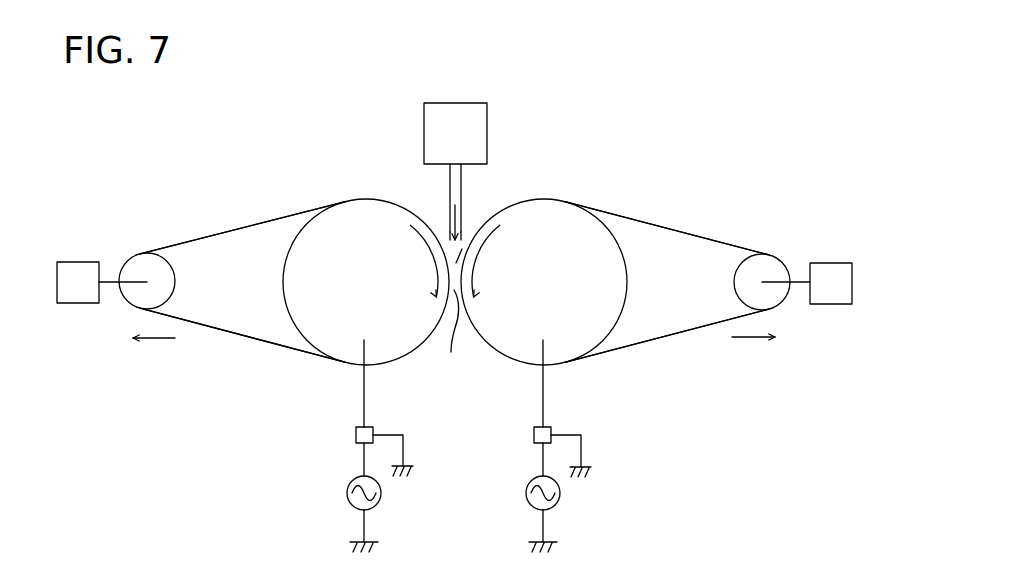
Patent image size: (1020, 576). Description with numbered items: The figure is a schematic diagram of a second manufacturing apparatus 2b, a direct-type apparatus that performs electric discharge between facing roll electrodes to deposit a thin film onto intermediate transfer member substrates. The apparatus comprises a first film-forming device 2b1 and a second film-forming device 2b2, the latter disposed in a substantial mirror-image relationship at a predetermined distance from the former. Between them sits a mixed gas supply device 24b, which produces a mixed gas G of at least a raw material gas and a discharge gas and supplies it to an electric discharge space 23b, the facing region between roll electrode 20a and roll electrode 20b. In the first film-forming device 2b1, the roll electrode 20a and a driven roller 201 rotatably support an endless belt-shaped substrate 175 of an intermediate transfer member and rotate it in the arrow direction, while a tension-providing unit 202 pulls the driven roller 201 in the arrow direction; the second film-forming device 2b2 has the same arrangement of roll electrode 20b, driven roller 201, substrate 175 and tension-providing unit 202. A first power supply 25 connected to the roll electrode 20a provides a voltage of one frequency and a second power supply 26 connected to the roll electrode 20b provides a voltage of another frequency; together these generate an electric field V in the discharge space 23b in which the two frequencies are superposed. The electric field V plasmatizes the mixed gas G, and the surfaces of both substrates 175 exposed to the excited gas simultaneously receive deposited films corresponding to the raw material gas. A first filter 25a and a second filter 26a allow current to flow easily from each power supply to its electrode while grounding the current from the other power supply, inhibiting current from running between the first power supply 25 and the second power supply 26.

The second manufacturing apparatus 2b is at (500, 78).
The first film-forming device 2b1 is at (257, 196).
The second film-forming device 2b2 is at (630, 185).
The roll electrode 20a is at (362, 208).
The roll electrode 20b is at (545, 218).
The electric discharge space 23b is at (470, 228).
The mixed gas supply device 24b is at (458, 102).
The first power supply 25 is at (382, 493).
The first filter 25a is at (368, 427).
The second power supply 26 is at (560, 493).
The second filter 26a is at (548, 427).
The substrate 175 is at (187, 242).
The driven roller 201 is at (143, 267).
The tension-providing unit 202 is at (80, 303).
The mixed gas G is at (450, 218).
The electric field V is at (453, 313).